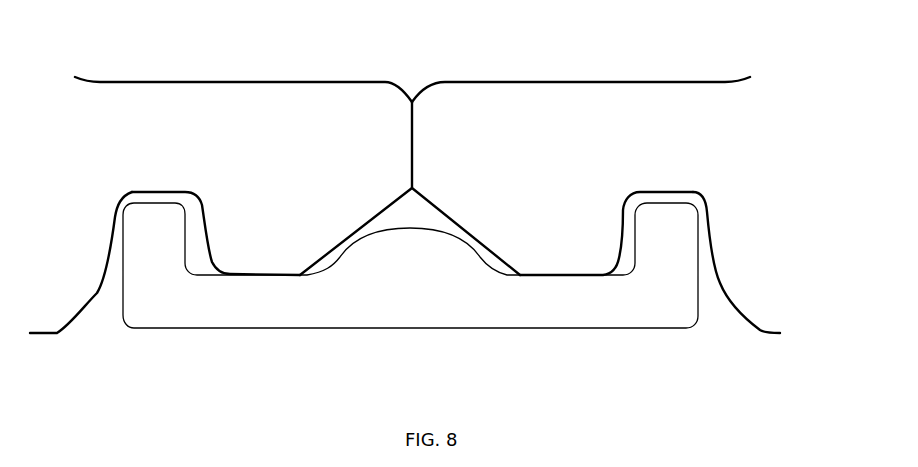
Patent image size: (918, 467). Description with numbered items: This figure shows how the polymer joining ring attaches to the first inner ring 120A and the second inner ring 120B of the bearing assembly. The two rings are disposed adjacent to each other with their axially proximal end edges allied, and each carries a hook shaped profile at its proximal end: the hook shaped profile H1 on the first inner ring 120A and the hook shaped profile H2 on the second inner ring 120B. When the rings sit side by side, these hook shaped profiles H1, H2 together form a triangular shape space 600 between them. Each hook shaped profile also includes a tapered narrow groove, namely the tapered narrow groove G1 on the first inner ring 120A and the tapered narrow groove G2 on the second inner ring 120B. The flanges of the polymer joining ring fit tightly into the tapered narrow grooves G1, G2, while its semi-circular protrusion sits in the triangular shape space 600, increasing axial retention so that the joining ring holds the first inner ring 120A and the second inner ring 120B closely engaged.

The first inner ring 120A is at (190, 99).
The second inner ring 120B is at (530, 100).
The triangular shape space 600 is at (413, 218).
The hook shaped profile H1 is at (552, 237).
The hook shaped profile H2 is at (265, 237).
The tapered narrow groove G1 is at (105, 300).
The tapered narrow groove G2 is at (705, 278).